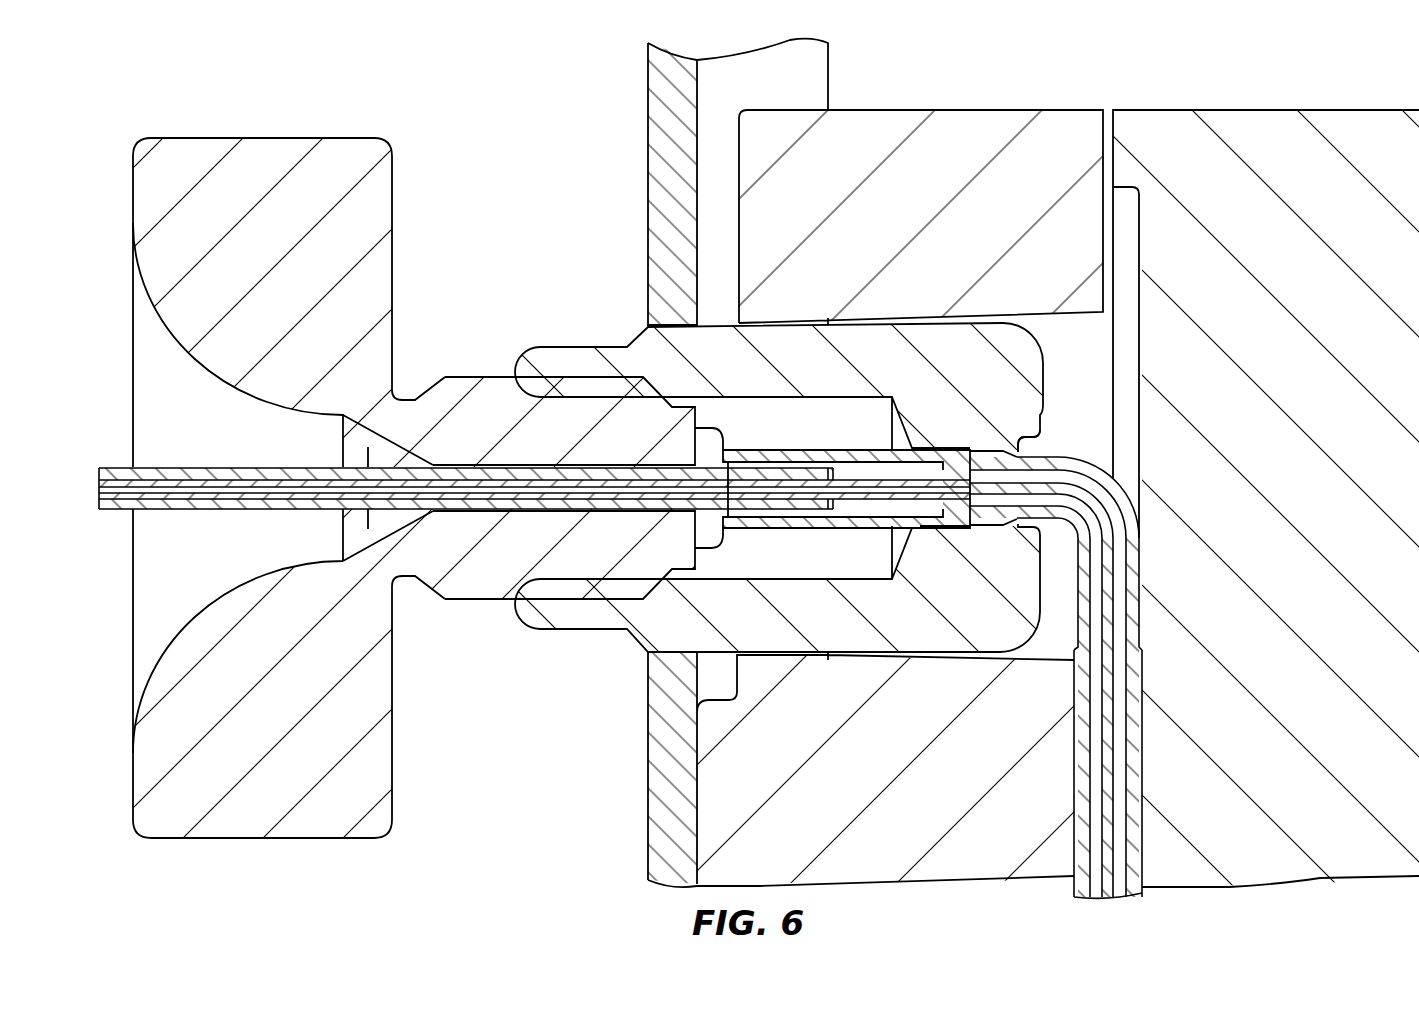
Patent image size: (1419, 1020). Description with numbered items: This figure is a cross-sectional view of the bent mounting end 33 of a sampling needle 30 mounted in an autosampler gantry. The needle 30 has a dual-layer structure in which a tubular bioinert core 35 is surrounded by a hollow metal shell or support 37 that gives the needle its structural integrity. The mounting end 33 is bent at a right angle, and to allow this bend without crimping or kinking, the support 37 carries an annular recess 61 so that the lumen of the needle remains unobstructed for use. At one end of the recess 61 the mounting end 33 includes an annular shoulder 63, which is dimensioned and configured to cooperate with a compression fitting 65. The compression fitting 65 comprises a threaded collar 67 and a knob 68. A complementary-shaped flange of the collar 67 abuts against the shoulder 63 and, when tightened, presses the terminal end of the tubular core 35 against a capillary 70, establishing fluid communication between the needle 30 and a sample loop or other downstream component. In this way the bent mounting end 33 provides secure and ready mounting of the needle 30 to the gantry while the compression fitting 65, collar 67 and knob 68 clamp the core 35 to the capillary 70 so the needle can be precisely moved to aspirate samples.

The needle 30 is at (1157, 738).
The mounting end 33 is at (1145, 490).
The tubular bioinert core 35 is at (1025, 497).
The hollow metal shell or support 37 is at (1083, 783).
The annular recess 61 is at (1093, 473).
The annular shoulder 63 is at (1022, 440).
The compression fitting 65 is at (390, 122).
The threaded collar 67 is at (660, 633).
The knob 68 is at (165, 793).
The capillary 70 is at (853, 495).